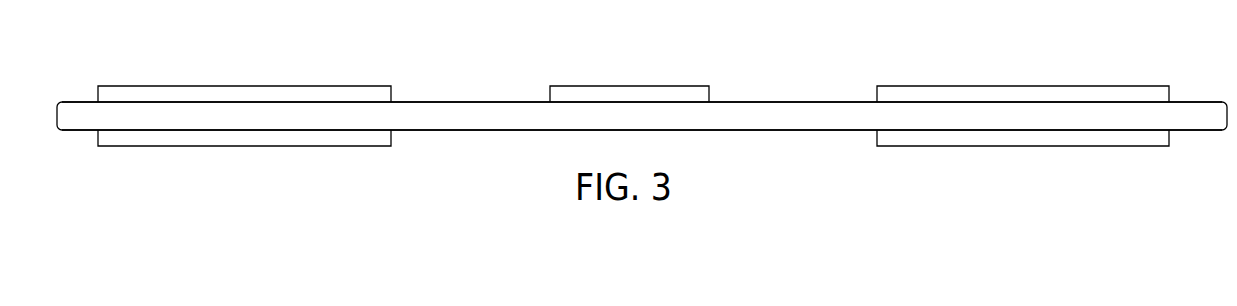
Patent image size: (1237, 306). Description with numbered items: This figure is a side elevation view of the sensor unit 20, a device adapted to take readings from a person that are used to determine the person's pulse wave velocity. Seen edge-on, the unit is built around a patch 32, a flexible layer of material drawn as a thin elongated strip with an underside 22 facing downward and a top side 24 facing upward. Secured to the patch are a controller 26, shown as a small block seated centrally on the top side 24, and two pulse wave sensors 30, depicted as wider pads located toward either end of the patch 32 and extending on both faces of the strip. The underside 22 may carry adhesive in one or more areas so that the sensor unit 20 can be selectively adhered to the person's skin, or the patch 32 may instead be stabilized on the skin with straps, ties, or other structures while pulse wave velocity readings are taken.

The sensor unit 20 is at (1092, 42).
The underside 22 is at (789, 101).
The top side 24 is at (785, 132).
The controller 26 is at (633, 90).
The pulse wave sensors 30 is at (240, 90).
The patch 32 is at (460, 117).